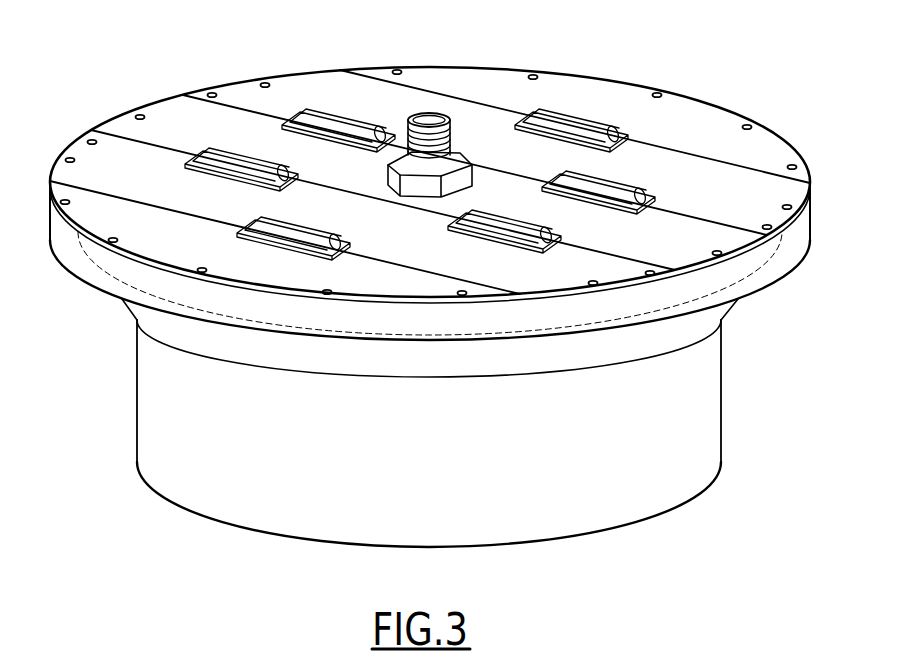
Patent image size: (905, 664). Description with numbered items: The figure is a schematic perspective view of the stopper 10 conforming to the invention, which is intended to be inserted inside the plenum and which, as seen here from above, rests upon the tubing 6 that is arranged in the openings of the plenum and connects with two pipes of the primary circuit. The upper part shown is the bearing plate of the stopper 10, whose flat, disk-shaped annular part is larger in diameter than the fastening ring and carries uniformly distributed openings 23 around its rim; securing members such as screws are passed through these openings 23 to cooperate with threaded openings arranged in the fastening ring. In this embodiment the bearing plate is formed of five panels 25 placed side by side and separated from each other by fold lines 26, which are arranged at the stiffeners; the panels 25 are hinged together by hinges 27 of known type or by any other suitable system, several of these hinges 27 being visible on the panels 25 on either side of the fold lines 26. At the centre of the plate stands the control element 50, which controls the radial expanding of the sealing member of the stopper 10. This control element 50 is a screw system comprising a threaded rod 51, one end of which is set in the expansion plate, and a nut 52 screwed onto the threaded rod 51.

The stopper 10 is at (110, 102).
The tubing 6 is at (128, 420).
The openings 23 is at (262, 82).
The panels 25 is at (589, 100).
The fold lines 26 is at (162, 148).
The hinges 27 is at (346, 127).
The control element 50 is at (437, 106).
The threaded rod 51 is at (452, 142).
The nut 52 is at (388, 178).